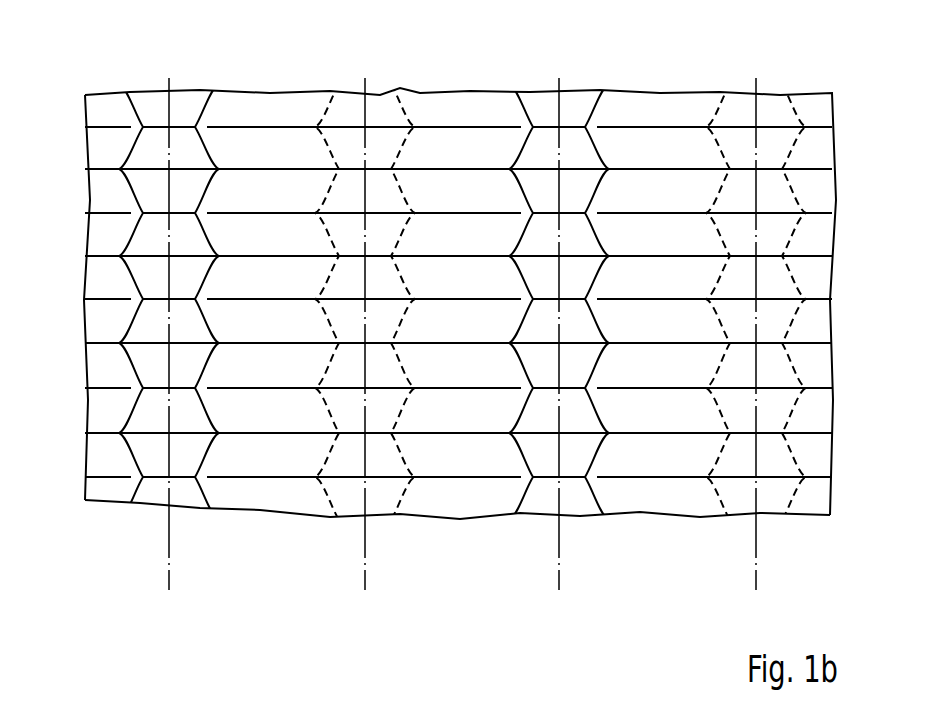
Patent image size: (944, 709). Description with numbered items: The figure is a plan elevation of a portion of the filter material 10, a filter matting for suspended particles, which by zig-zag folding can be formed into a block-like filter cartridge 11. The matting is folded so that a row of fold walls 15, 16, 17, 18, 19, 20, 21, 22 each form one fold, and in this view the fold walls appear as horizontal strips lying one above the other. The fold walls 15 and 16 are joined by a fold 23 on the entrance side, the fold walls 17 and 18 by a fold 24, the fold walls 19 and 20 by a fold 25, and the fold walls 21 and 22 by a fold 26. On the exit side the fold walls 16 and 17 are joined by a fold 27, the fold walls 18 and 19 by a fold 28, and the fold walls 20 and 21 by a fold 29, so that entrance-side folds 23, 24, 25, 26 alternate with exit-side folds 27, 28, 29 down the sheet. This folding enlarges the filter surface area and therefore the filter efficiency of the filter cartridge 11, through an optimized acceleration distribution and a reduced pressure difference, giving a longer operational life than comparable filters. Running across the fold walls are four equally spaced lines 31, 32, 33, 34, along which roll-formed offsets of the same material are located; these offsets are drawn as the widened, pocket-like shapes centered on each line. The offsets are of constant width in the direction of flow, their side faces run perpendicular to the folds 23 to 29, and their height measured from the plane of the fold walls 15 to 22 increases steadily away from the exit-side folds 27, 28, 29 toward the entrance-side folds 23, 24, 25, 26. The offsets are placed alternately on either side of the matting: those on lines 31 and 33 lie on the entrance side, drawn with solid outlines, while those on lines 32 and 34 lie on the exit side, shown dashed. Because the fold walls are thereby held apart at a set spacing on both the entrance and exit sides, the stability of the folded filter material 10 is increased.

The filter material 10 is at (270, 496).
The filter cartridge 11 is at (546, 37).
The fold wall 15 is at (92, 144).
The fold wall 16 is at (92, 185).
The fold wall 17 is at (92, 229).
The fold wall 18 is at (92, 272).
The fold wall 19 is at (92, 315).
The fold wall 20 is at (92, 359).
The fold wall 21 is at (92, 402).
The fold wall 22 is at (92, 446).
The fold 23 is at (816, 167).
The fold 24 is at (818, 255).
The fold 25 is at (818, 341).
The fold 26 is at (818, 431).
The fold 27 is at (818, 220).
The fold 28 is at (820, 305).
The fold 29 is at (820, 394).
The line 31 is at (169, 588).
The line 32 is at (365, 588).
The line 33 is at (559, 588).
The line 34 is at (756, 588).